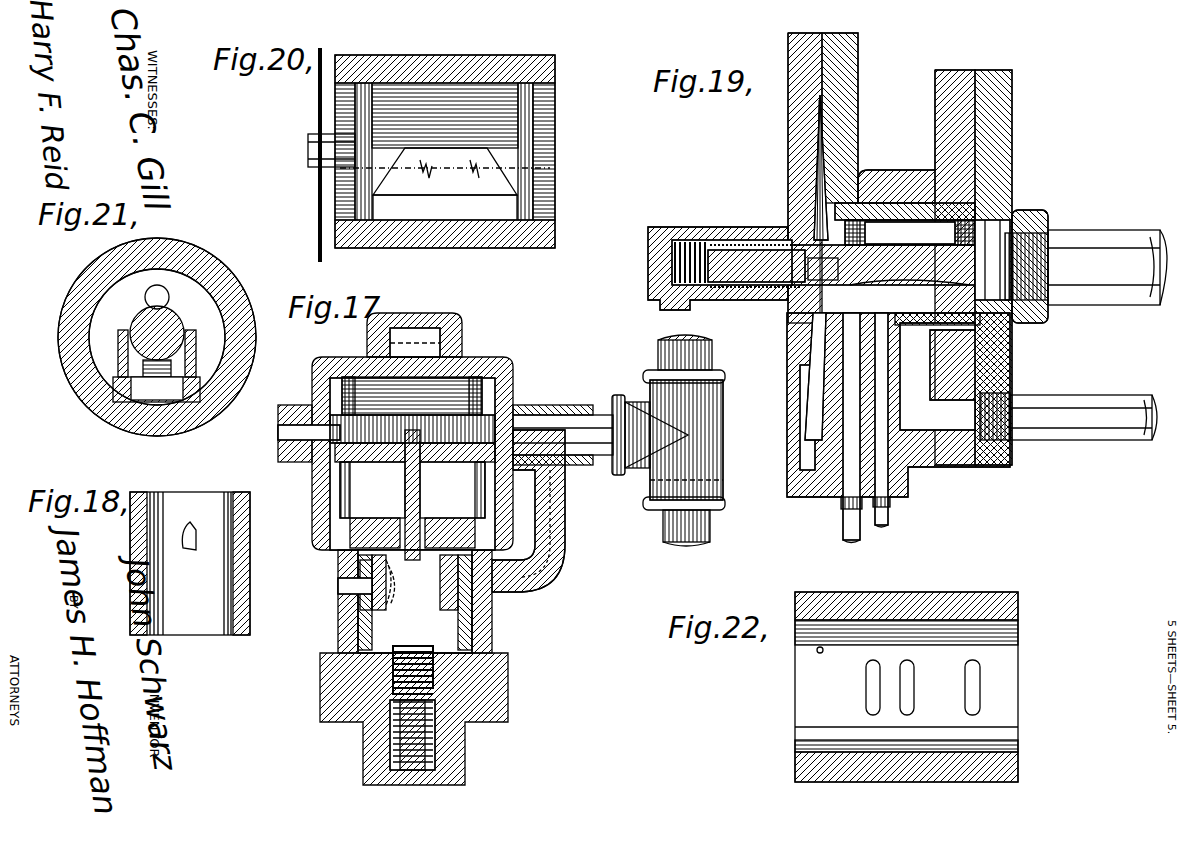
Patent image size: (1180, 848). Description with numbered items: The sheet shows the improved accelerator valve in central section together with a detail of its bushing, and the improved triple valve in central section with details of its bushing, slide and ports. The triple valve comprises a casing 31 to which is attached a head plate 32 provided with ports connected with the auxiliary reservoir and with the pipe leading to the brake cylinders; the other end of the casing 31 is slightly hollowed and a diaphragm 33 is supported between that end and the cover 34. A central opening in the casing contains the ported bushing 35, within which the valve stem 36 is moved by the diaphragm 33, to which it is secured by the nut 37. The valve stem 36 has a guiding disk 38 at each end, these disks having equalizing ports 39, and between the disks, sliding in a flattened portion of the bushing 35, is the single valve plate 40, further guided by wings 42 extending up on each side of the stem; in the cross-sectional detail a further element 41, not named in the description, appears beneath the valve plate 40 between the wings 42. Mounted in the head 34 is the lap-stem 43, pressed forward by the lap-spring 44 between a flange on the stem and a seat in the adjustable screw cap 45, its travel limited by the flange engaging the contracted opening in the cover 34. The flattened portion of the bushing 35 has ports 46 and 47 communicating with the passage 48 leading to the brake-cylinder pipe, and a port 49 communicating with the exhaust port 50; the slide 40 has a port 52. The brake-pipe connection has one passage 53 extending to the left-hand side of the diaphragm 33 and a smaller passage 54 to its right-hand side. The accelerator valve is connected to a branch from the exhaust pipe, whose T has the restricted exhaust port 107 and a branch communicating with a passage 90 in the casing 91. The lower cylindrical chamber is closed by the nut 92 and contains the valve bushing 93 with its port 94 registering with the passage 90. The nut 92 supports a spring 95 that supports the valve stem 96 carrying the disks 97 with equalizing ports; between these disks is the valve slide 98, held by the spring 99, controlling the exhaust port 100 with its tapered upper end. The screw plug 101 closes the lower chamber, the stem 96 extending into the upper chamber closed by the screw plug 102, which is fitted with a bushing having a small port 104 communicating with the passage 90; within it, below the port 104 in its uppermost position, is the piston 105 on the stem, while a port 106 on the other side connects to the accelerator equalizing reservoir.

In FIG. 19, the casing 31 is at (866, 185).
In FIG. 19, the head plate 32 is at (1012, 140).
In FIG. 20, the diaphragm 33 is at (318, 98).
In FIG. 19, the diaphragm 33 is at (815, 172).
In FIG. 19, the cover 34 is at (790, 128).
In FIG. 20, the ported bushing 35 is at (455, 58).
In FIG. 21, the ported bushing 35 is at (195, 252).
In FIG. 19, the ported bushing 35 is at (898, 203).
In FIG. 22, the ported bushing 35 is at (965, 598).
In FIG. 20, the valve stem 36 is at (430, 148).
In FIG. 21, the valve stem 36 is at (176, 322).
In FIG. 19, the valve stem 36 is at (910, 233).
In FIG. 20, the nut 37 is at (313, 155).
In FIG. 19, the nut 37 is at (800, 215).
In FIG. 21, the guiding disk 38 is at (135, 300).
In FIG. 19, the guiding disk 38 is at (910, 234).
In FIG. 21, the equalizing port 39 is at (157, 297).
In FIG. 20, the valve plate 40 is at (445, 207).
In FIG. 19, the valve plate 40 is at (883, 277).
In FIG. 21, the support block 41 is at (156, 389).
In FIG. 19, the support block 41 is at (992, 260).
In FIG. 20, the wings 42 is at (449, 170).
In FIG. 21, the wings 42 is at (156, 352).
In FIG. 19, the lap-stem 43 is at (733, 248).
In FIG. 19, the lap-spring 44 is at (682, 240).
In FIG. 19, the adjustable screw cap 45 is at (650, 258).
In FIG. 19, the port 46 is at (1012, 328).
In FIG. 22, the port 46 is at (978, 686).
In FIG. 19, the port 47 is at (1005, 345).
In FIG. 22, the port 47 is at (906, 688).
In FIG. 19, the passage 48 is at (937, 376).
In FIG. 19, the port 49 is at (840, 330).
In FIG. 22, the port 49 is at (866, 693).
In FIG. 19, the exhaust port 50 is at (880, 412).
In FIG. 19, the port 52 is at (950, 322).
In FIG. 19, the passage 53 is at (803, 420).
In FIG. 19, the passage 54 is at (832, 428).
In FIG. 17, the passage 90 is at (555, 488).
In FIG. 17, the casing 91 is at (562, 535).
In FIG. 17, the nut 92 is at (508, 700).
In FIG. 18, the valve bushing 93 is at (250, 567).
In FIG. 17, the valve bushing 93 is at (526, 626).
In FIG. 17, the port 94 is at (520, 570).
In FIG. 17, the spring 95 is at (470, 675).
In FIG. 17, the valve stem 96 is at (445, 520).
In FIG. 17, the disks 97 is at (415, 589).
In FIG. 17, the valve slide 98 is at (385, 585).
In FIG. 17, the spring 99 is at (358, 622).
In FIG. 18, the exhaust port 100 is at (187, 553).
In FIG. 17, the exhaust port 100 is at (372, 592).
In FIG. 17, the screw plug 101 is at (372, 490).
In FIG. 17, the screw plug 102 is at (480, 355).
In FIG. 17, the port 104 is at (510, 410).
In FIG. 17, the piston 105 is at (416, 501).
In FIG. 17, the port 106 is at (305, 420).
In FIG. 17, the restricted exhaust port 107 is at (675, 525).